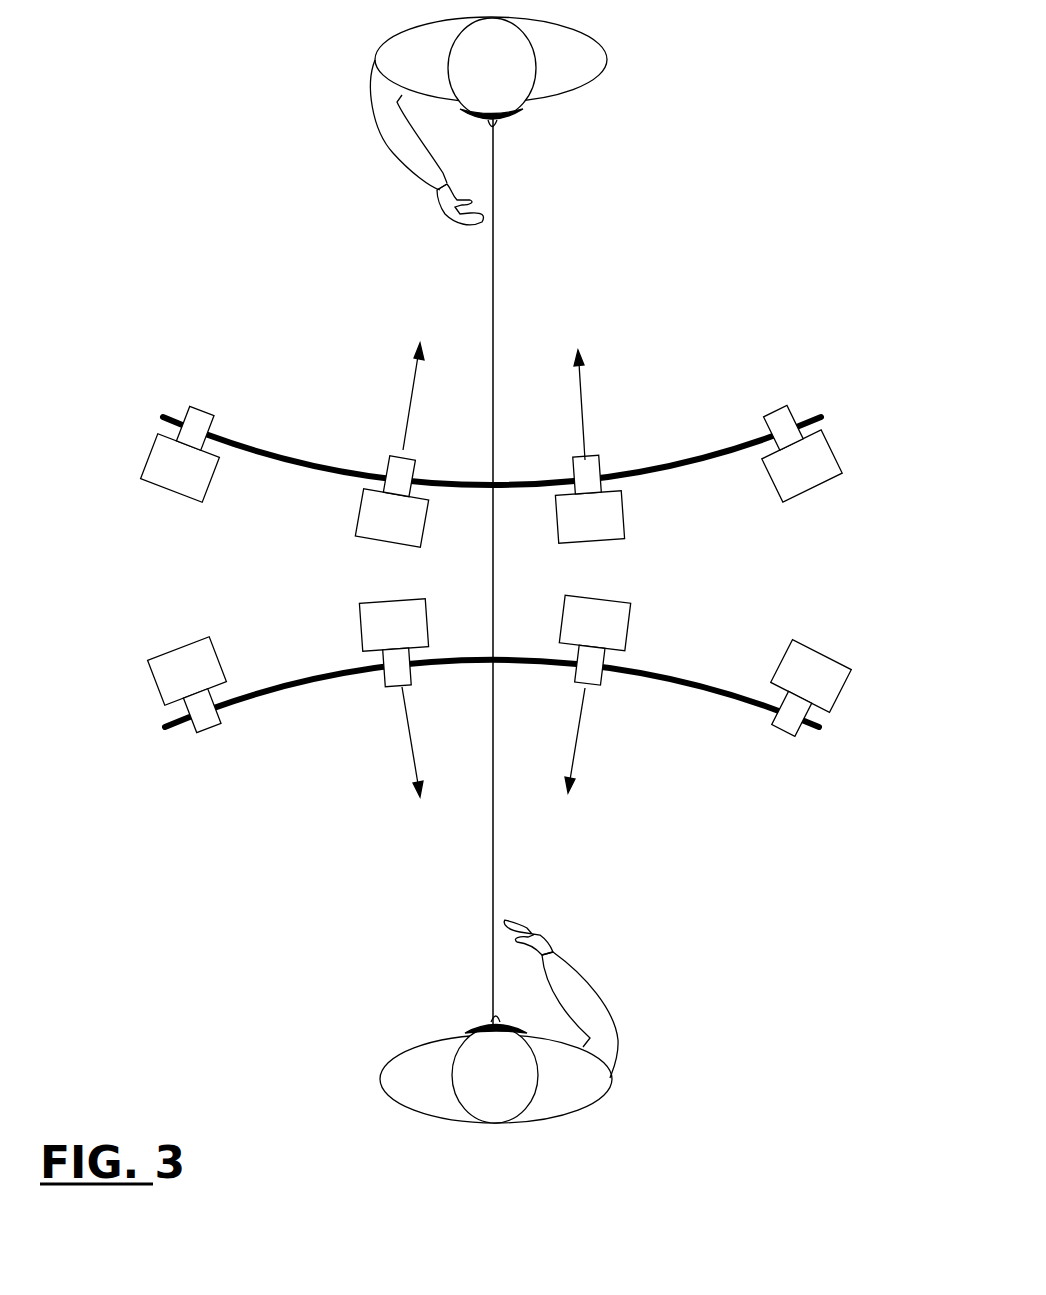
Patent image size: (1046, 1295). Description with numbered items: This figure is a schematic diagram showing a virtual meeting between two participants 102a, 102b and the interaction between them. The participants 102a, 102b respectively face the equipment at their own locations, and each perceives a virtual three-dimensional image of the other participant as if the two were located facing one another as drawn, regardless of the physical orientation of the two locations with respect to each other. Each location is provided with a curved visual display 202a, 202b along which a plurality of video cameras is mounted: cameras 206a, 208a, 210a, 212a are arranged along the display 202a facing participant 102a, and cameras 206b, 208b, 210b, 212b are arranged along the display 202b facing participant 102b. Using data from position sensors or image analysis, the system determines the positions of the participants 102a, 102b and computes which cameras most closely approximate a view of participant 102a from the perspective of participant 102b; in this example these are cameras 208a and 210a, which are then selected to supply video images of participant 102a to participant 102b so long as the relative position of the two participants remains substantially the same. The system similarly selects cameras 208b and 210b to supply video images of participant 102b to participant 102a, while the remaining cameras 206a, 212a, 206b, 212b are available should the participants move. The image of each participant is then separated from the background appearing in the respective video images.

The participant 102a is at (605, 60).
The participant 102b is at (380, 1078).
The visual display 202a is at (297, 455).
The visual display 202b is at (317, 685).
The video camera 206a is at (838, 432).
The video camera 206b is at (165, 698).
The video camera 208a is at (625, 505).
The video camera 208b is at (360, 637).
The video camera 210a is at (425, 515).
The video camera 210b is at (627, 623).
The video camera 212a is at (208, 492).
The video camera 212b is at (781, 660).